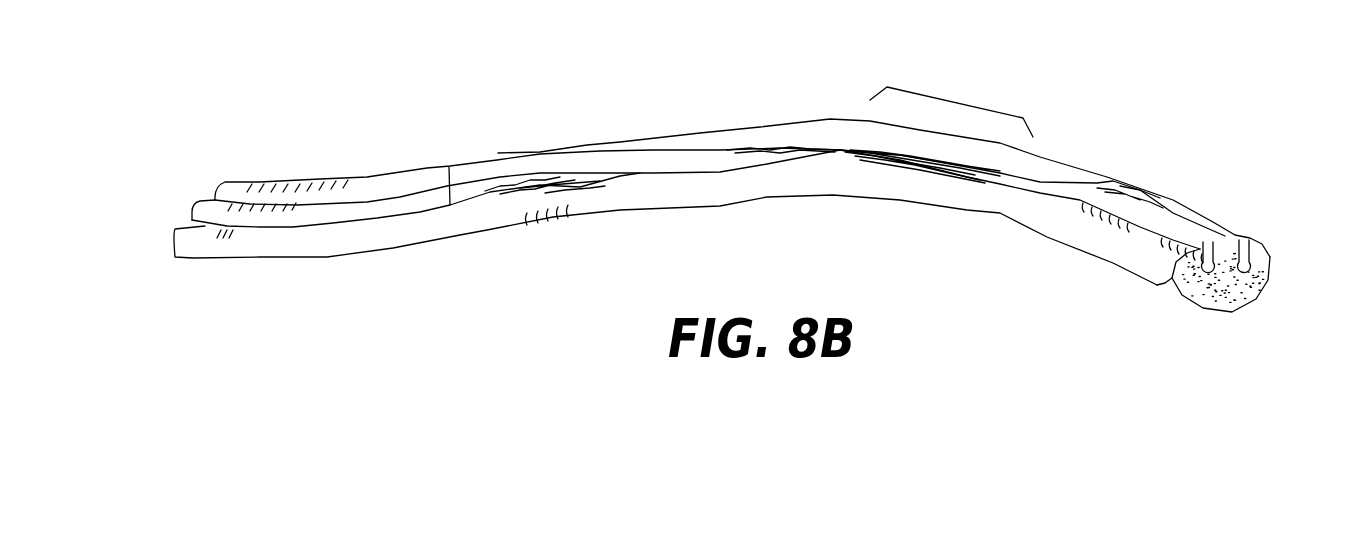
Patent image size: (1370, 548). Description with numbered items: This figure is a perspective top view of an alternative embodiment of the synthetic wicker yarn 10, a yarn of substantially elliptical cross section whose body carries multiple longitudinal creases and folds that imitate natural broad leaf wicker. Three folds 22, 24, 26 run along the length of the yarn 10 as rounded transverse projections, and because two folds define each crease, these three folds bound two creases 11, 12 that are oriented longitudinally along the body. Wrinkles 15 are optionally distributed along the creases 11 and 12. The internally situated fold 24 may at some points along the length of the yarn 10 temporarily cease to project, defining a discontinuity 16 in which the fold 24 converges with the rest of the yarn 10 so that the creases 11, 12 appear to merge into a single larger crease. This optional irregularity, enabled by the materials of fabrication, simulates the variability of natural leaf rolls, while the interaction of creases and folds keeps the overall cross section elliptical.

The yarn 10 is at (1182, 132).
The crease 11 is at (449, 167).
The crease 12 is at (498, 155).
The wrinkles 15 is at (581, 186).
The discontinuity 16 is at (968, 105).
The fold 22 is at (267, 250).
The fold 24 is at (285, 203).
The fold 26 is at (326, 181).